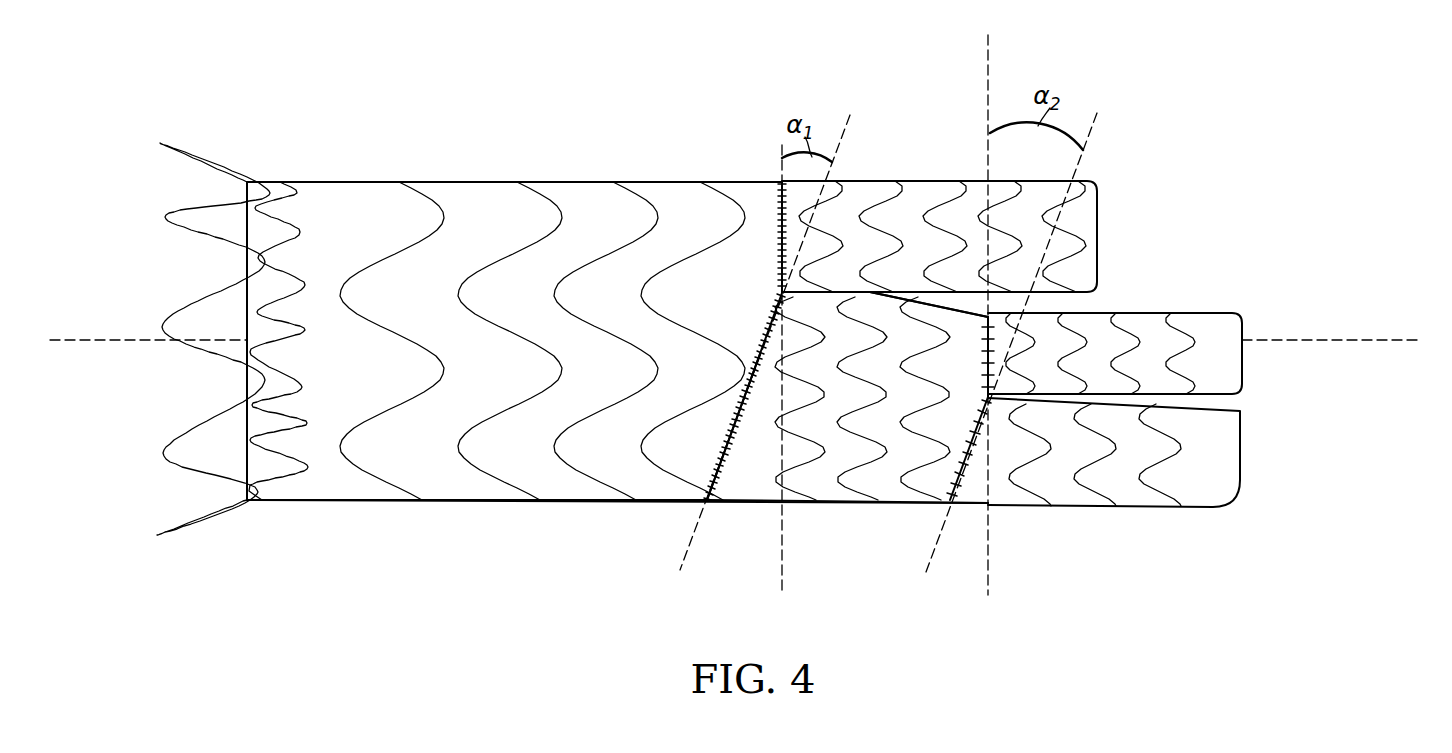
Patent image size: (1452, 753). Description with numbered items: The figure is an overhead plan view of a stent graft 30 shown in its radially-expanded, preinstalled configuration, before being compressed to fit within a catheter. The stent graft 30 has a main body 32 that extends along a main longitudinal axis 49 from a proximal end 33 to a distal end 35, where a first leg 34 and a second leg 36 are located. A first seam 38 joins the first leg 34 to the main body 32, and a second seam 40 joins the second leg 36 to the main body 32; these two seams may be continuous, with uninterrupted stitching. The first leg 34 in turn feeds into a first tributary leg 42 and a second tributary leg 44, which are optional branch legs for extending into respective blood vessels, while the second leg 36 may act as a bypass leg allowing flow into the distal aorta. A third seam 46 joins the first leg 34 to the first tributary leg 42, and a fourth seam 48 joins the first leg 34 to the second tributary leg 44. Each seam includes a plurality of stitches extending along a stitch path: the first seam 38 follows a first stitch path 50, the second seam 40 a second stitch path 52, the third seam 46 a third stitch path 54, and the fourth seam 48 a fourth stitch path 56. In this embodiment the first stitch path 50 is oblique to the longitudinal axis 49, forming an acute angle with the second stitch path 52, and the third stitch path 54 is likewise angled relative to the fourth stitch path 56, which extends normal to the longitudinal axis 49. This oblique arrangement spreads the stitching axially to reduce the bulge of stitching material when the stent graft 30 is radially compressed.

The stent graft 30 is at (1221, 90).
The main body 32 is at (458, 197).
The proximal end 33 is at (247, 262).
The first leg 34 is at (885, 482).
The distal end 35 is at (777, 322).
The second leg 36 is at (912, 195).
The first seam 38 is at (725, 433).
The second seam 40 is at (779, 268).
The first tributary leg 42 is at (1138, 492).
The second tributary leg 44 is at (1150, 325).
The third seam 46 is at (990, 503).
The fourth seam 48 is at (988, 357).
The main longitudinal axis 49 is at (1328, 340).
The first stitch path 50 is at (680, 566).
The second stitch path 52 is at (782, 545).
The third stitch path 54 is at (932, 553).
The fourth stitch path 56 is at (988, 562).